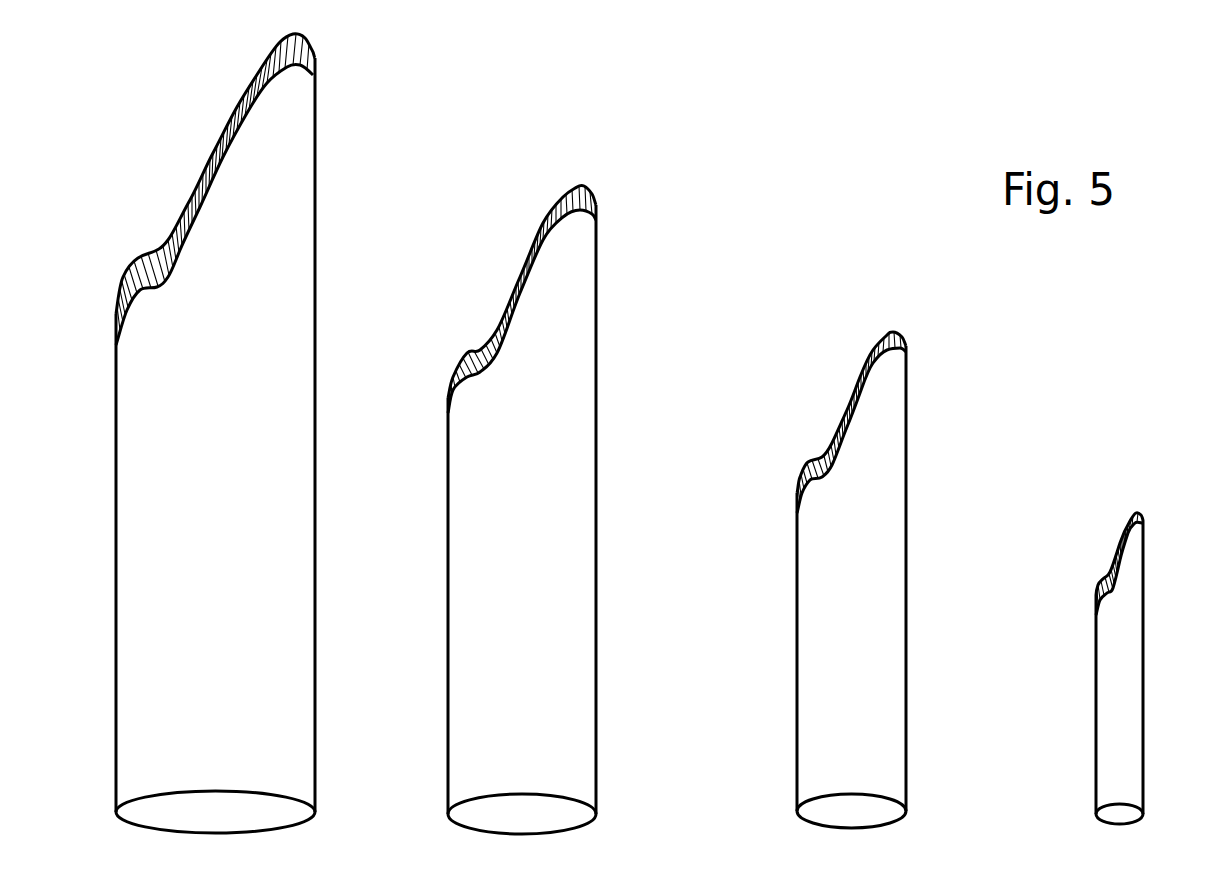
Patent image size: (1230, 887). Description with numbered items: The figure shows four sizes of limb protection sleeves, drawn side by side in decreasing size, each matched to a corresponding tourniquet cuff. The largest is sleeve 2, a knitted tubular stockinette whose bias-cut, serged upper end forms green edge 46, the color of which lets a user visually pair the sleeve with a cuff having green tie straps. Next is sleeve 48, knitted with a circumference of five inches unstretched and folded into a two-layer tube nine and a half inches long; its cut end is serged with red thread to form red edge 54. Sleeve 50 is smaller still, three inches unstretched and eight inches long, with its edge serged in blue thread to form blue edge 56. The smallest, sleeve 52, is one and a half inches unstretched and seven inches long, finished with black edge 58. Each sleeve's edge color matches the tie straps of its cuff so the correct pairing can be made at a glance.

The limb protection sleeve 2 is at (316, 137).
The green edge 46 is at (205, 163).
The limb protection sleeve 48 is at (596, 272).
The red edge 54 is at (558, 208).
The limb protection sleeve 50 is at (906, 385).
The blue edge 56 is at (878, 340).
The limb protection sleeve 52 is at (1143, 605).
The black edge 58 is at (1130, 517).